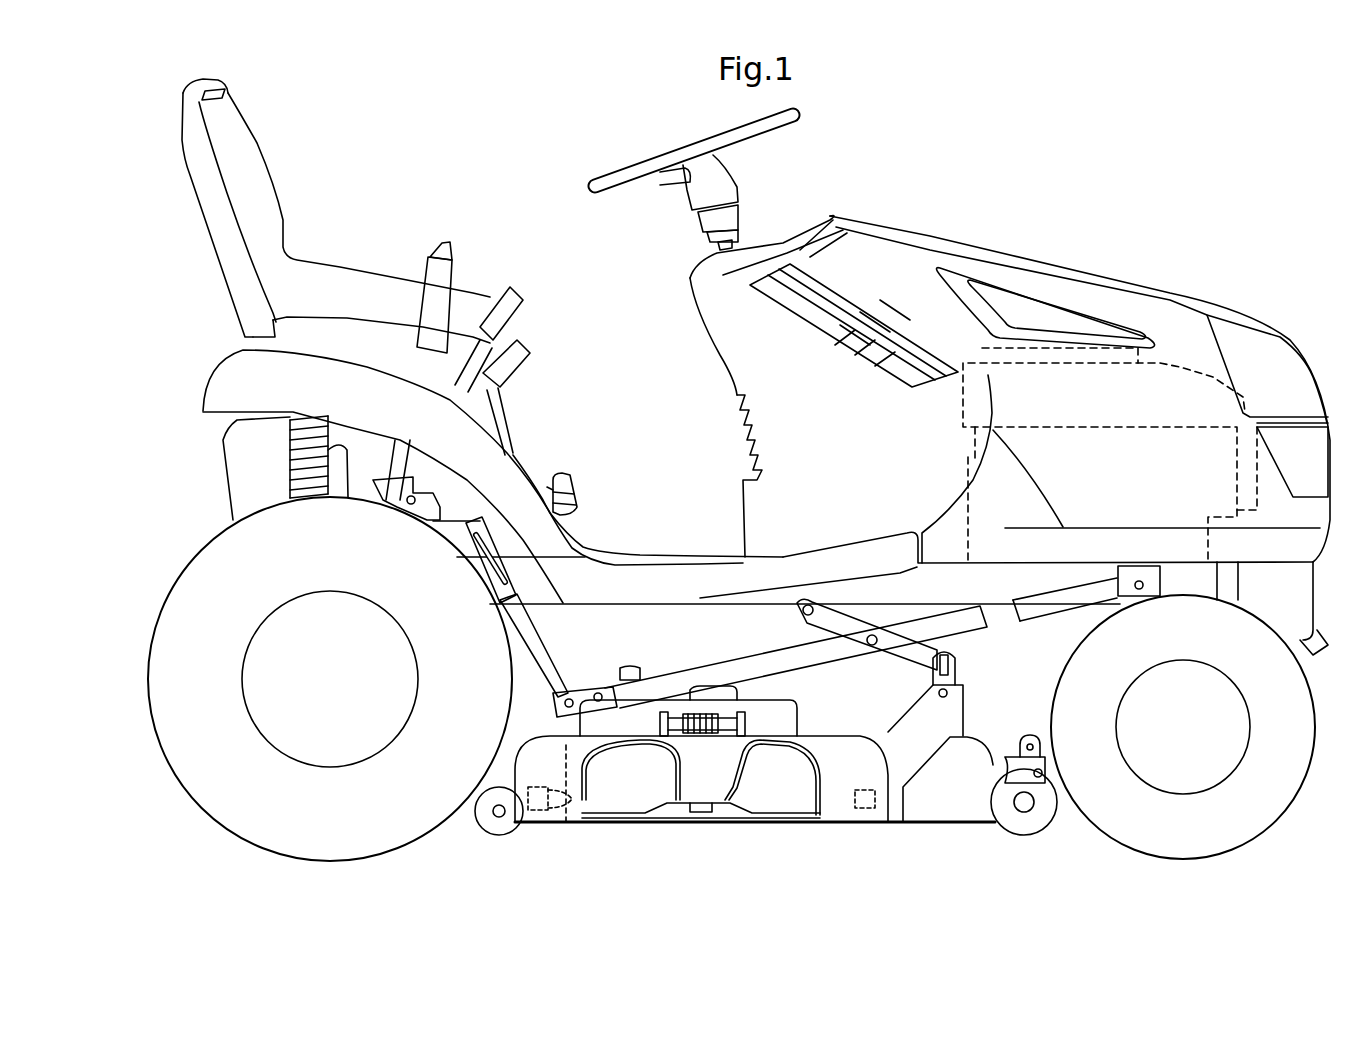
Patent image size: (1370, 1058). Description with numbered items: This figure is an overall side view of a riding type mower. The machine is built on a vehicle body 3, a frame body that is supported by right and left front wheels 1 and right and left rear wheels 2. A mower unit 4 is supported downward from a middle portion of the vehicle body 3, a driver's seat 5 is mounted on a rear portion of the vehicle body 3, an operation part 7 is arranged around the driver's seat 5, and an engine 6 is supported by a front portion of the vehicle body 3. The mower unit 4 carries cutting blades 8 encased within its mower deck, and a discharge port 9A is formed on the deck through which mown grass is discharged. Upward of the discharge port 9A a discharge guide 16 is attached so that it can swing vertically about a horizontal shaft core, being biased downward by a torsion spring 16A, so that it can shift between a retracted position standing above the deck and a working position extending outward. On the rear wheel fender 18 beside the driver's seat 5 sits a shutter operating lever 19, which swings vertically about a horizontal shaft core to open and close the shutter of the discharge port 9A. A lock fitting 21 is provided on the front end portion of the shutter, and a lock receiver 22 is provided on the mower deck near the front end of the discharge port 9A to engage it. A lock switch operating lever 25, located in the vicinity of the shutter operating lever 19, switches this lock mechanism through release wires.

The front wheel 1 is at (1095, 823).
The rear wheel 2 is at (412, 825).
The vehicle body 3 is at (1080, 577).
The mower unit 4 is at (920, 830).
The driver's seat 5 is at (277, 180).
The engine 6 is at (1178, 368).
The operation part 7 is at (540, 205).
The cutting blade 8 is at (780, 822).
The discharge port 9A is at (645, 798).
The discharge guide 16 is at (822, 748).
The torsion spring 16A is at (708, 713).
The rear wheel fender 18 is at (243, 380).
The shutter operating lever 19 is at (510, 297).
The lock fitting 21 is at (555, 828).
The lock receiver 22 is at (870, 822).
The lock switch operating lever 25 is at (517, 353).